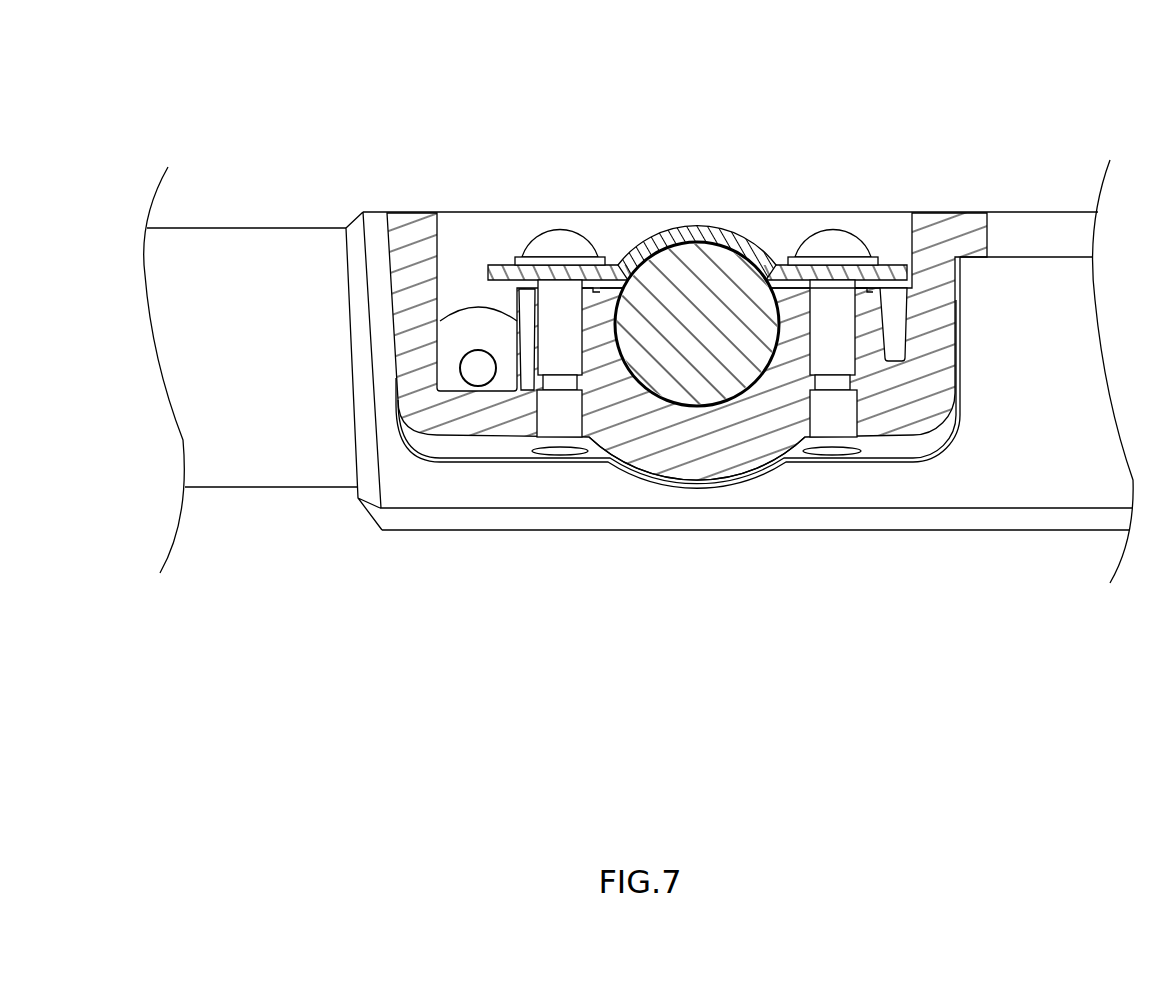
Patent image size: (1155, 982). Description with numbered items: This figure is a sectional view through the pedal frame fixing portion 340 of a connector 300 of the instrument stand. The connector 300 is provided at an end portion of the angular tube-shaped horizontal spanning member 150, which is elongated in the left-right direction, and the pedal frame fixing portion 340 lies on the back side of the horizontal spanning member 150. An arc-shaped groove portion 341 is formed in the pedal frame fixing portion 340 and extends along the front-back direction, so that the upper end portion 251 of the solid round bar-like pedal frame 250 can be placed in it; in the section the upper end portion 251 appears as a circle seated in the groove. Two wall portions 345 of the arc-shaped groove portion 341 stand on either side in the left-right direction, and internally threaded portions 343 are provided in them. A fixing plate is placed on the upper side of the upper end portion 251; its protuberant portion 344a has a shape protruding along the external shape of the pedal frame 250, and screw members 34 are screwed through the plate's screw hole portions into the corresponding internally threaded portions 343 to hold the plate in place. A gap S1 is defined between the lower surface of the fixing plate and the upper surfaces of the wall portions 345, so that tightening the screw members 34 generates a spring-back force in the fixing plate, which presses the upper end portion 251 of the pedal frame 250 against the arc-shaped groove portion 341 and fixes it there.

The horizontal spanning member 150 is at (237, 262).
The pedal frame fixing portion 340 is at (466, 203).
The connector 300 is at (1040, 237).
The screw member 34 is at (557, 243).
The wall portion 345 is at (530, 317).
The arcuate portion 344a is at (695, 233).
The internally threaded portion 343 is at (535, 354).
The gap S1 is at (603, 282).
The arc-shaped groove portion 341 is at (687, 410).
The upper end portion 251 is at (703, 370).
The pedal frame 250 is at (697, 442).